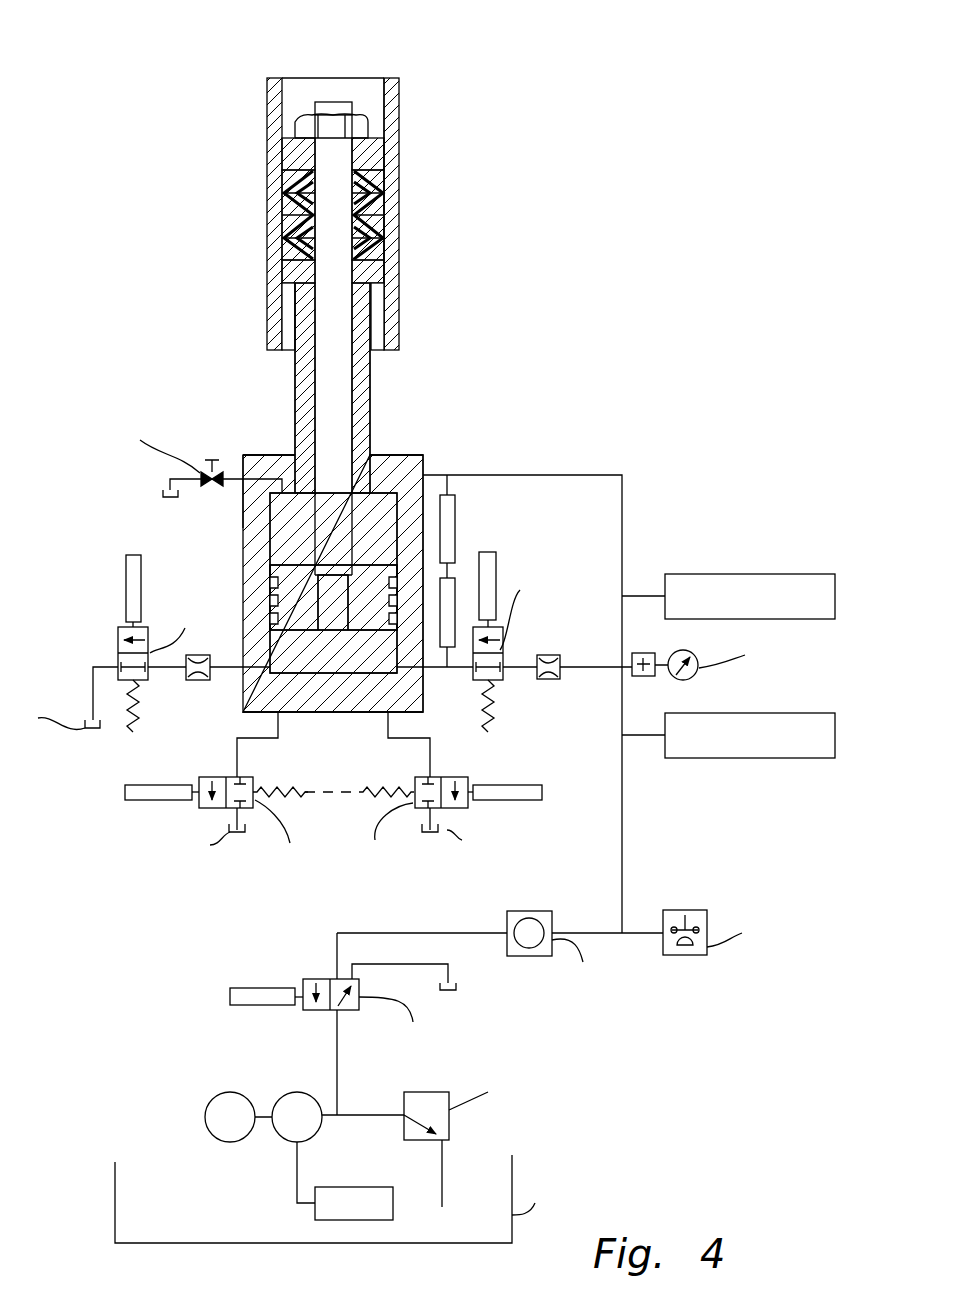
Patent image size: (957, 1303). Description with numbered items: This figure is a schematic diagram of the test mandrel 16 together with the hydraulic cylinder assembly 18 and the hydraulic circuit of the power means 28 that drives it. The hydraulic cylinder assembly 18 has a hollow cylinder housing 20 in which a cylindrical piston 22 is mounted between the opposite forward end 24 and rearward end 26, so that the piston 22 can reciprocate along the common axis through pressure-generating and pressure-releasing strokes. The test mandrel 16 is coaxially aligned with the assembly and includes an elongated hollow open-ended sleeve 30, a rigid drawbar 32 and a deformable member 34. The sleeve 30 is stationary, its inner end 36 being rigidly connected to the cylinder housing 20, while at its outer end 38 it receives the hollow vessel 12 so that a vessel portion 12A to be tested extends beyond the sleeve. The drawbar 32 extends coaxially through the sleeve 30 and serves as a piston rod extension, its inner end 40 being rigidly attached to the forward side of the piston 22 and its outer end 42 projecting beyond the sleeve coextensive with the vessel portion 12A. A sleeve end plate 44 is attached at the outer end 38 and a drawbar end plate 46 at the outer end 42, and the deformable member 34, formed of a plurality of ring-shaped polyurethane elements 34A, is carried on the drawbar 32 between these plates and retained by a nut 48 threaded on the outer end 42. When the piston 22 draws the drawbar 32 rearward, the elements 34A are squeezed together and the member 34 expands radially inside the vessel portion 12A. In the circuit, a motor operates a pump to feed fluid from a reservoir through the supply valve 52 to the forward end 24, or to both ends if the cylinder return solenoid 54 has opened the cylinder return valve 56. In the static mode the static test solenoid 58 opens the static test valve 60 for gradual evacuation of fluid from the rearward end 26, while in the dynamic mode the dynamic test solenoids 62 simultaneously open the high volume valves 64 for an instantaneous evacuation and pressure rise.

The hollow vessel 12 is at (408, 84).
The vessel portion 12A is at (388, 234).
The test mandrel 16 is at (393, 390).
The hydraulic cylinder assembly 18 is at (438, 463).
The cylinder housing 20 is at (243, 528).
The cylindrical piston 22 is at (374, 567).
The forward end 24 is at (243, 499).
The rearward end 26 is at (252, 695).
The power means 28 is at (190, 938).
The hollow sleeve 30 is at (372, 420).
The drawbar 32 is at (335, 338).
The deformable member 34 is at (274, 202).
The ring-shaped elements 34A is at (384, 200).
The inner end 36 is at (374, 450).
The outer end 38 is at (388, 270).
The inner end 40 is at (320, 564).
The outer end 42 is at (335, 106).
The sleeve end plate 44 is at (285, 272).
The drawbar end plate 46 is at (282, 160).
The nut 48 is at (370, 127).
The supply valve 52 is at (399, 1017).
The cylinder return solenoid 54 is at (488, 572).
The cylinder return valve 56 is at (514, 661).
The static test solenoid 58 is at (128, 592).
The static test valve 60 is at (209, 658).
The dynamic test solenoids 62 is at (160, 800).
The high volume valves 64 is at (335, 799).